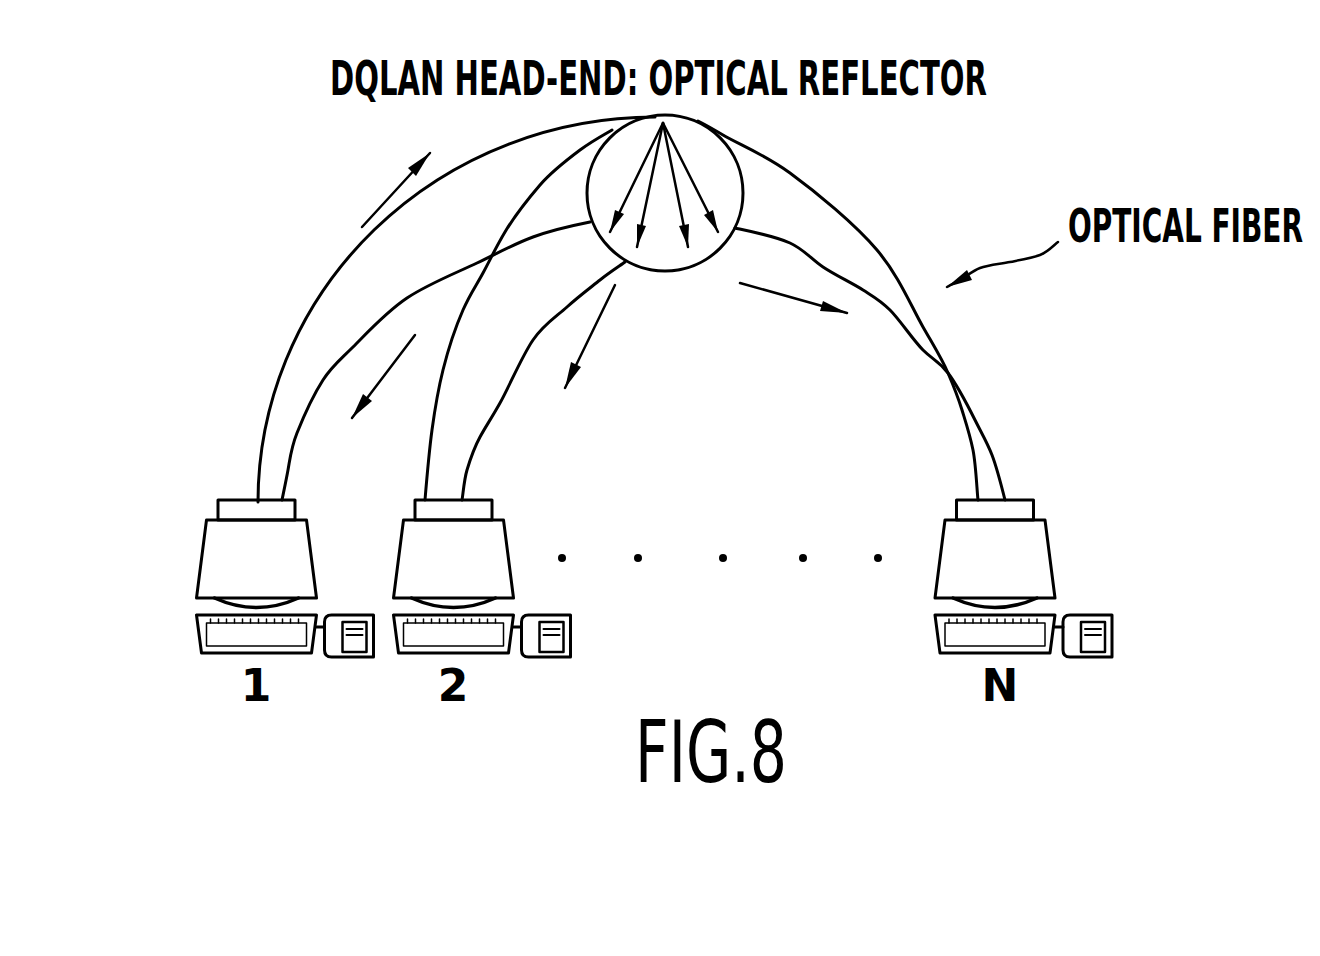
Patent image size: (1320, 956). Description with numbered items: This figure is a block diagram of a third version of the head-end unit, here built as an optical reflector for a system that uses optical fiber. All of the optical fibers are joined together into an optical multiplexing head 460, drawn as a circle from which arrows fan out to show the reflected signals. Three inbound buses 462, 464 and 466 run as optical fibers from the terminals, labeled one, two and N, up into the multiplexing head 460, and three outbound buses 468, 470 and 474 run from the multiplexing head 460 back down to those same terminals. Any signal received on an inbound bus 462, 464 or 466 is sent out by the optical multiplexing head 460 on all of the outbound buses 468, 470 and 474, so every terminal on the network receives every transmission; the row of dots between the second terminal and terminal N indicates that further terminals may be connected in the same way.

The optical multiplexing head 460 is at (743, 187).
The inbound bus 462 is at (313, 312).
The inbound bus 464 is at (528, 195).
The inbound bus 466 is at (877, 250).
The outbound bus 468 is at (290, 473).
The outbound bus 470 is at (477, 467).
The outbound bus 474 is at (1000, 477).